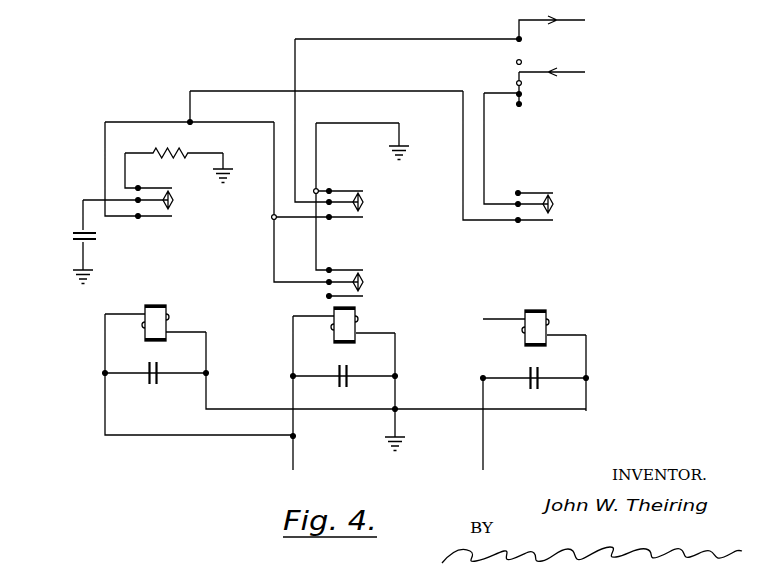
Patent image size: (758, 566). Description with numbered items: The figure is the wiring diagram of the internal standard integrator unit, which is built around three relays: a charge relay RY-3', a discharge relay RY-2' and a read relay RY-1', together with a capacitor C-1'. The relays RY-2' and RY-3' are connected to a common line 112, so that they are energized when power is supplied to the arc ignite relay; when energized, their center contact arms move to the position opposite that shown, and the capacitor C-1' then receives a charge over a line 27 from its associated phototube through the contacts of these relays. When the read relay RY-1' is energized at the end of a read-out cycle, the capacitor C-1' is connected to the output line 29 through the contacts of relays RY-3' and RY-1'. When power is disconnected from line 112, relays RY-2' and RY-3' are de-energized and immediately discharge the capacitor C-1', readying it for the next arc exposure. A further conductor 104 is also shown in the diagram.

The line 27 is at (539, 20).
The output line 29 is at (562, 74).
The common line 112 is at (293, 458).
The conductor 104 is at (483, 450).
The capacitor C-1' is at (62, 256).
The read relay RY-1' is at (555, 316).
The discharge relay RY-2' is at (370, 322).
The charge relay RY-3' is at (172, 312).